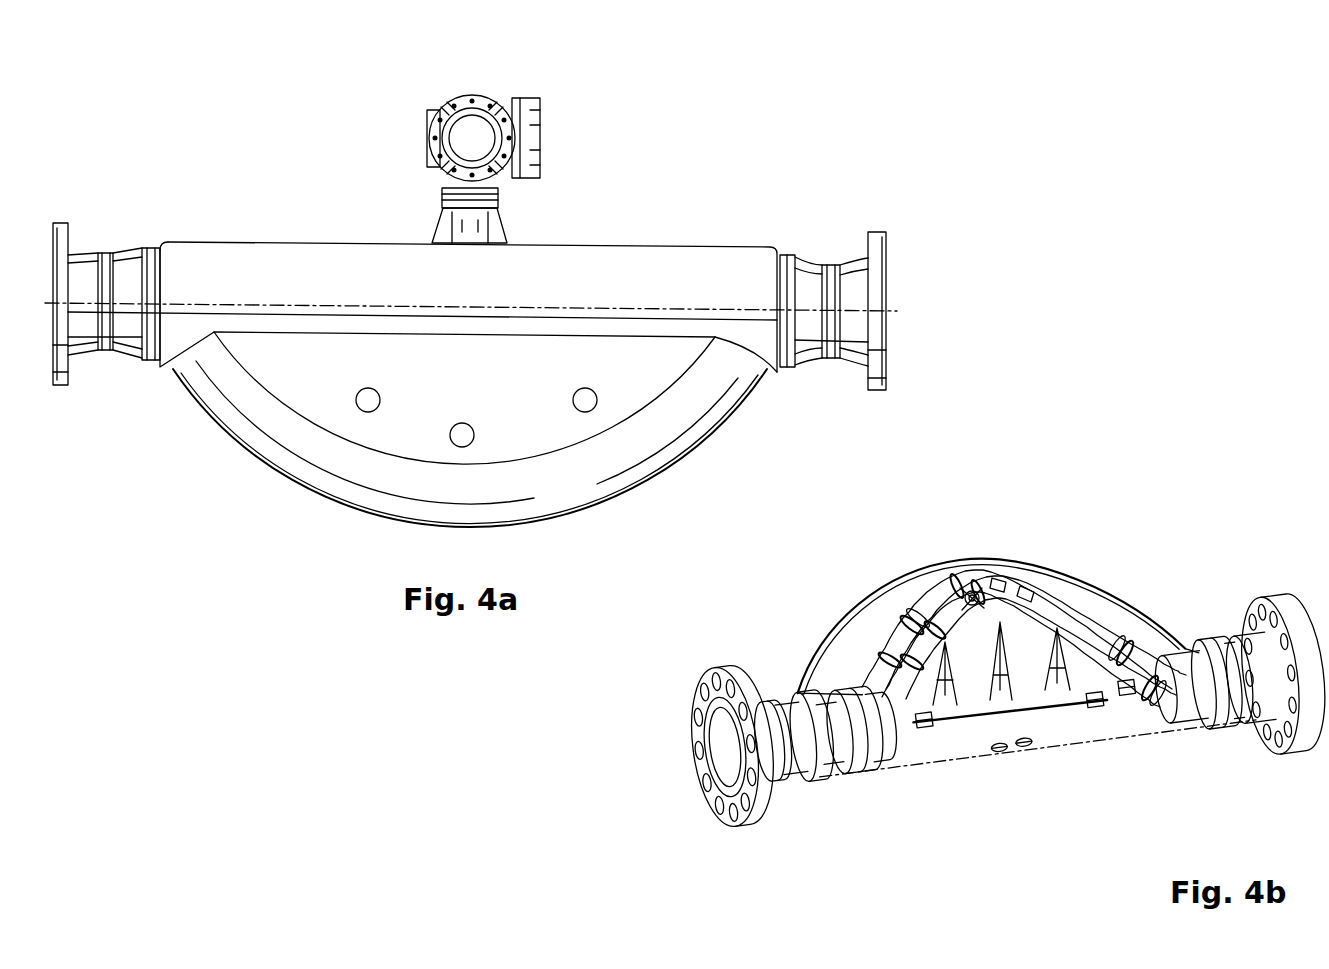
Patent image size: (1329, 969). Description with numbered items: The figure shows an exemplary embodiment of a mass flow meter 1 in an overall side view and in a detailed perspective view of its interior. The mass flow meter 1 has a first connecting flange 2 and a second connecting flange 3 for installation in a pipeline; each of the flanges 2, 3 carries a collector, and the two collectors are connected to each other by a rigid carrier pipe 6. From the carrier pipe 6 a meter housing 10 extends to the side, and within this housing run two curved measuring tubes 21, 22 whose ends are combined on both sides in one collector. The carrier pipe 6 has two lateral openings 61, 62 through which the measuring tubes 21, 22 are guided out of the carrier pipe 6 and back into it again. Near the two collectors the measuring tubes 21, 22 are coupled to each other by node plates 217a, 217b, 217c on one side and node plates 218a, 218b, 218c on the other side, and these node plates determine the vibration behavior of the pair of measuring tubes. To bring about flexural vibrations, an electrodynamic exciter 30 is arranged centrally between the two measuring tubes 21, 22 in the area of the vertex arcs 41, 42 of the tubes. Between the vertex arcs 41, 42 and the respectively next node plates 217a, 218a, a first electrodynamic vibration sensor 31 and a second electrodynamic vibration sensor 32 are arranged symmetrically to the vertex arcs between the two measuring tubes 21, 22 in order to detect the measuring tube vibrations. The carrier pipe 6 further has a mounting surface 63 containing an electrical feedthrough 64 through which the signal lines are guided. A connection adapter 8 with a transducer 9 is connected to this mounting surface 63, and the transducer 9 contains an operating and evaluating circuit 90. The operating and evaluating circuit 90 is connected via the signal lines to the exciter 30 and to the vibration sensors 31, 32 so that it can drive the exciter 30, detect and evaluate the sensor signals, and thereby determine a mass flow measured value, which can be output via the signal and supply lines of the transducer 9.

In FIG. 4A, the mass flow meter 1 is at (652, 172).
In FIG. 4A, the first connecting flange 2 is at (63, 222).
In FIG. 4B, the first connecting flange 2 is at (735, 812).
In FIG. 4A, the second connecting flange 3 is at (876, 230).
In FIG. 4B, the second connecting flange 3 is at (1290, 746).
In FIG. 4A, the carrier pipe 6 is at (286, 229).
In FIG. 4B, the carrier pipe 6 is at (975, 758).
In FIG. 4A, the connection adapter 8 is at (500, 228).
In FIG. 4A, the transducer 9 is at (512, 100).
In FIG. 4A, the meter housing 10 is at (641, 484).
In FIG. 4B, the meter housing 10 is at (800, 678).
In FIG. 4A, the operating and evaluating circuit 90 is at (467, 147).
In FIG. 4B, the first measuring tube 21 is at (868, 626).
In FIG. 4B, the second measuring tube 22 is at (1115, 716).
In FIG. 4B, the electrodynamic exciter 30 is at (966, 592).
In FIG. 4B, the first electrodynamic vibration sensor 31 is at (893, 633).
In FIG. 4B, the second electrodynamic vibration sensor 32 is at (1090, 613).
In FIG. 4B, the vertex arc 41 is at (999, 578).
In FIG. 4B, the vertex arc 42 is at (1030, 586).
In FIG. 4B, the lateral opening 61 is at (842, 662).
In FIG. 4B, the lateral opening 62 is at (1135, 643).
In FIG. 4B, the mounting surface 63 is at (1000, 762).
In FIG. 4B, the electrical feedthrough 64 is at (1026, 762).
In FIG. 4B, the node plate 217a is at (930, 766).
In FIG. 4B, the node plate 217b is at (880, 736).
In FIG. 4B, the node plate 217c is at (815, 772).
In FIG. 4B, the node plate 218a is at (1045, 786).
In FIG. 4B, the node plate 218b is at (1072, 766).
In FIG. 4B, the node plate 218c is at (1180, 723).